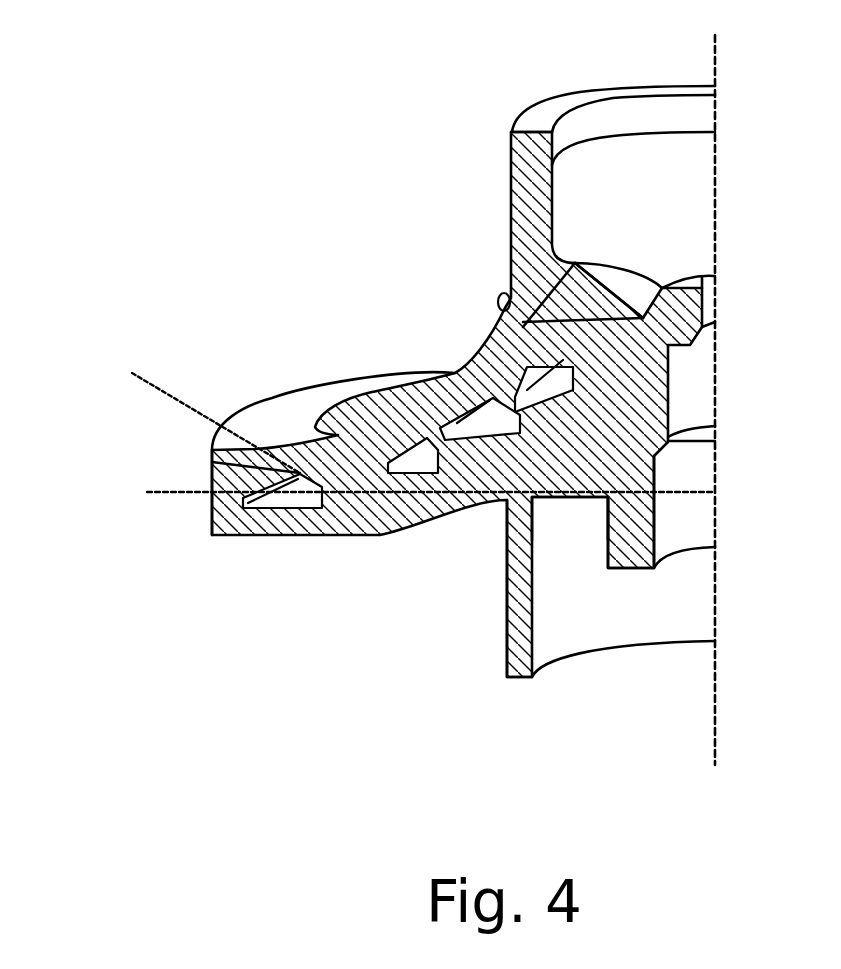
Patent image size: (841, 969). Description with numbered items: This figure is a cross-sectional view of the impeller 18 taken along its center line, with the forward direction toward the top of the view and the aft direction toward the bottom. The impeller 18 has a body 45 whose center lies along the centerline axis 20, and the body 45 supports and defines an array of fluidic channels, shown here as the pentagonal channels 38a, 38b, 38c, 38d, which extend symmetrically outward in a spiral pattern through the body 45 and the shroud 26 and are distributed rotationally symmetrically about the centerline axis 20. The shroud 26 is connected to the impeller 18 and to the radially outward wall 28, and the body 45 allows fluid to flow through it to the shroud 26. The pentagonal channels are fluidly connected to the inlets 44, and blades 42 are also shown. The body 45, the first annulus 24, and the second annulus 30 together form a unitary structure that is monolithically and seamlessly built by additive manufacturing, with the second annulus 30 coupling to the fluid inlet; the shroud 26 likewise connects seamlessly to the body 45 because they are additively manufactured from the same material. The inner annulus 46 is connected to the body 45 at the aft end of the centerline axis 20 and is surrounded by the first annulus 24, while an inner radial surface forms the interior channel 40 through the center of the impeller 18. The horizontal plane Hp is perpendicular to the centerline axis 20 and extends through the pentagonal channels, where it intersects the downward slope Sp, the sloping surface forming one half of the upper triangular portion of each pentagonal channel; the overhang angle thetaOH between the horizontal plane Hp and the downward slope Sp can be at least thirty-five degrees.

The impeller 18 is at (512, 272).
The centerline axis 20 is at (715, 157).
The first annulus 24 is at (522, 640).
The shroud 26 is at (438, 403).
The radially outward wall 28 is at (210, 520).
The second annulus 30 is at (533, 165).
The pentagonal channel 38a is at (293, 490).
The pentagonal channel 38b is at (407, 472).
The pentagonal channel 38c is at (492, 423).
The pentagonal channel 38d is at (537, 355).
The interior channel 40 is at (691, 398).
The blades 42 is at (622, 282).
The inlets 44 is at (542, 318).
The body 45 is at (507, 503).
The inner annulus 46 is at (632, 548).
The downward slope Sp is at (145, 383).
The overhang angle thetaOH is at (212, 463).
The horizontal plane Hp is at (157, 492).